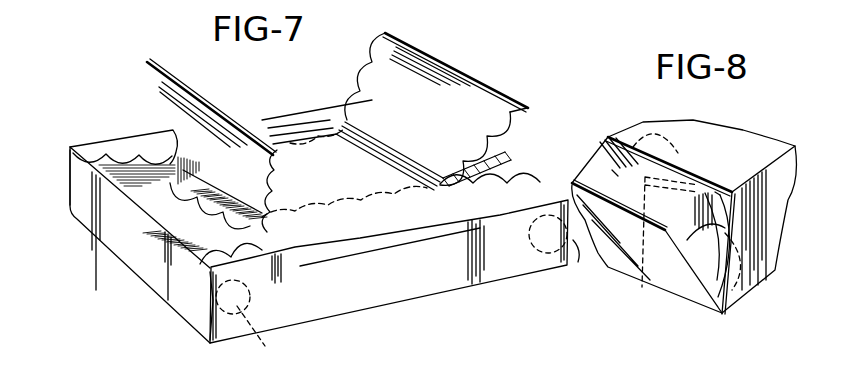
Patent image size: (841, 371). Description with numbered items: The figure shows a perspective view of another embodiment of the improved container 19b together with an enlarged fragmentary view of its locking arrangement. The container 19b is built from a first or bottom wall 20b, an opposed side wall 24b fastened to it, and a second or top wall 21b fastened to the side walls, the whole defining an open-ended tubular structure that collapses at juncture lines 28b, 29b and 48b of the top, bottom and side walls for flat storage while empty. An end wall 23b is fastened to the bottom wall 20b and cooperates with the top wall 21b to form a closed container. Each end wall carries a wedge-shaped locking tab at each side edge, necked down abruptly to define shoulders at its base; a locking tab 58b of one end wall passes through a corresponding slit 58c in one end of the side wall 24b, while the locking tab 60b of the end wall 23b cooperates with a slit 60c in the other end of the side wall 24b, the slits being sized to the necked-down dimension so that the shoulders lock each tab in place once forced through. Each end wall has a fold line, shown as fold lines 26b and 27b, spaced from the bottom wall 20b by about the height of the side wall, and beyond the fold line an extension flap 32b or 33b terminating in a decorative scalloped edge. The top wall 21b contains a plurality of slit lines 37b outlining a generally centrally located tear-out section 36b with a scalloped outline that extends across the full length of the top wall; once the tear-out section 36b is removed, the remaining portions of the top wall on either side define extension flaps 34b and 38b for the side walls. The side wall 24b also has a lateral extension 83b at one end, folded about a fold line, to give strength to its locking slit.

In FIG. 7, the container 19b is at (498, 47).
In FIG. 8, the container 19b is at (600, 135).
In FIG. 7, the bottom wall 20b is at (272, 204).
In FIG. 7, the top wall 21b is at (288, 122).
In FIG. 8, the top wall 21b is at (718, 137).
In FIG. 7, the end wall 23b is at (135, 260).
In FIG. 8, the end wall 23b is at (617, 257).
In FIG. 7, the side wall 24b is at (433, 288).
In FIG. 8, the side wall 24b is at (773, 270).
In FIG. 7, the fold line 26b is at (503, 178).
In FIG. 7, the fold line 27b is at (120, 187).
In FIG. 7, the juncture line 28b is at (385, 236).
In FIG. 7, the juncture line 29b is at (110, 145).
In FIG. 7, the extension flap 32b is at (500, 172).
In FIG. 7, the extension flap 33b is at (147, 186).
In FIG. 8, the extension flap 33b is at (612, 170).
In FIG. 7, the extension flap 34b is at (328, 237).
In FIG. 7, the tear-out section 36b is at (410, 57).
In FIG. 7, the slit lines 37b is at (280, 148).
In FIG. 8, the slit lines 37b is at (677, 137).
In FIG. 7, the extension flap 38b is at (338, 110).
In FIG. 7, the juncture line 48b is at (380, 307).
In FIG. 7, the locking tab 58b is at (546, 247).
In FIG. 7, the slit 58c is at (578, 258).
In FIG. 7, the locking tab 60b is at (257, 321).
In FIG. 8, the locking tab 60b is at (708, 270).
In FIG. 7, the slit 60c is at (207, 323).
In FIG. 8, the slit 60c is at (718, 194).
In FIG. 8, the lateral extension 83b is at (658, 270).